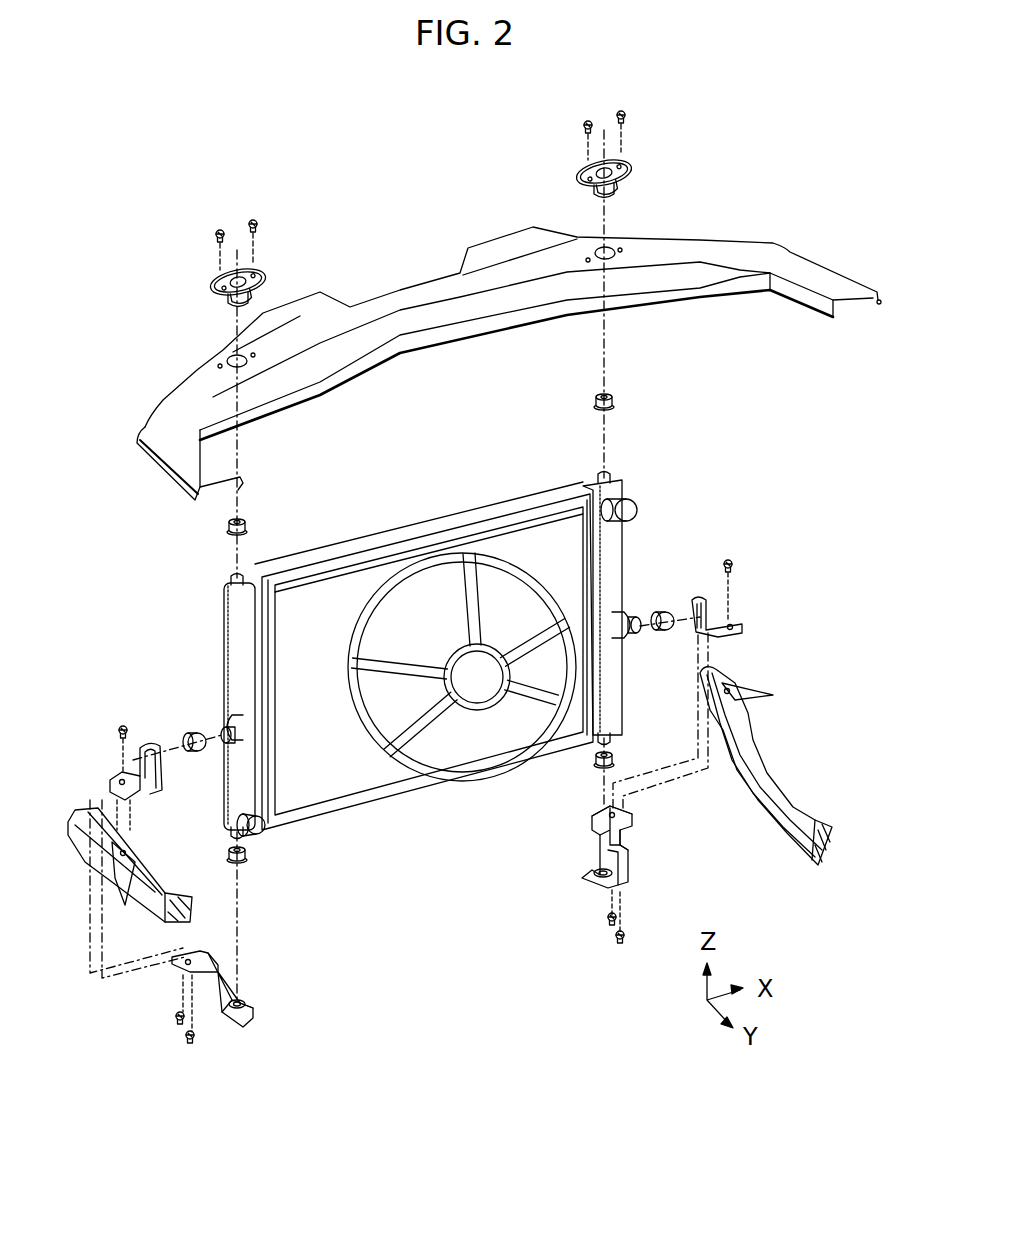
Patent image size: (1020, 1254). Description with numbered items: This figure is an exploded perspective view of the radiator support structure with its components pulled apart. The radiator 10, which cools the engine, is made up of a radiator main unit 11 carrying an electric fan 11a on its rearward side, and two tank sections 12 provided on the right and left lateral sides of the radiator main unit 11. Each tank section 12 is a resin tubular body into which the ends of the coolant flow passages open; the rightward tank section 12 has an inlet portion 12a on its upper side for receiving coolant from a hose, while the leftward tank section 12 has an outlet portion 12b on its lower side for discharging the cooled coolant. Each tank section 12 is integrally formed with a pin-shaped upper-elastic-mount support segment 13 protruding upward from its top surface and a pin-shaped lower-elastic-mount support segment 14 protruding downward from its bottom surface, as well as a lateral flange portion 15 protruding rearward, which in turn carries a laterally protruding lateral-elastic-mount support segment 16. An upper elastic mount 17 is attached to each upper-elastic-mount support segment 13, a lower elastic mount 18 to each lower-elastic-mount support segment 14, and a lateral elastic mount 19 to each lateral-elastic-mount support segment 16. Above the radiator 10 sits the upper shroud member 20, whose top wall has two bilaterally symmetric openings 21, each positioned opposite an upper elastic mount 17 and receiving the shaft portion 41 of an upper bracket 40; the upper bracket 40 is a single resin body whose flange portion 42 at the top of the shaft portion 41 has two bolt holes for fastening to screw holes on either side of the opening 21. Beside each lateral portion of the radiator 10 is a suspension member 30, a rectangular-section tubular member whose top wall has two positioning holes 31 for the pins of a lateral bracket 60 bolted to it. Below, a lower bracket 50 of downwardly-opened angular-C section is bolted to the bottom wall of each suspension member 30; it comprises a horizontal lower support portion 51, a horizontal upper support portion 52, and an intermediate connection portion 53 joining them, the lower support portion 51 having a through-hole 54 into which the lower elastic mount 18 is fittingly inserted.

The radiator 10 is at (433, 694).
The radiator main unit 11 is at (424, 650).
The electric fan 11a is at (477, 680).
The tank section 12 is at (237, 648).
The inlet portion 12a is at (637, 513).
The outlet portion 12b is at (263, 830).
The upper-elastic-mount support segment 13 is at (232, 582).
The lower-elastic-mount support segment 14 is at (233, 830).
The lateral flange portion 15 is at (228, 720).
The lateral-elastic-mount support segment 16 is at (227, 757).
The upper elastic mount 17 is at (229, 527).
The lower elastic mount 18 is at (243, 863).
The lateral elastic mount 19 is at (190, 735).
The upper shroud member 20 is at (807, 265).
The opening 21 is at (230, 353).
The suspension member 30 is at (78, 843).
The positioning hole 31 is at (125, 905).
The upper bracket 40 is at (225, 273).
The shaft portion 41 is at (230, 303).
The flange portion 42 is at (217, 290).
The lower bracket 50 is at (430, 934).
The lower support portion 51 is at (623, 897).
The upper support portion 52 is at (630, 817).
The intermediate connection portion 53 is at (622, 855).
The through-hole 54 is at (246, 1002).
The lateral bracket 60 is at (112, 773).